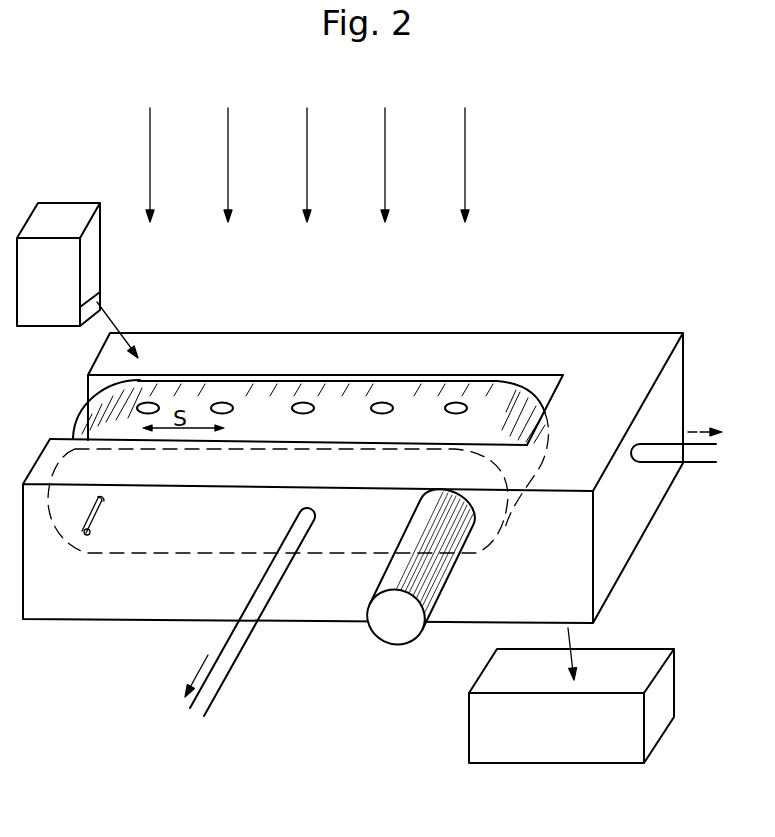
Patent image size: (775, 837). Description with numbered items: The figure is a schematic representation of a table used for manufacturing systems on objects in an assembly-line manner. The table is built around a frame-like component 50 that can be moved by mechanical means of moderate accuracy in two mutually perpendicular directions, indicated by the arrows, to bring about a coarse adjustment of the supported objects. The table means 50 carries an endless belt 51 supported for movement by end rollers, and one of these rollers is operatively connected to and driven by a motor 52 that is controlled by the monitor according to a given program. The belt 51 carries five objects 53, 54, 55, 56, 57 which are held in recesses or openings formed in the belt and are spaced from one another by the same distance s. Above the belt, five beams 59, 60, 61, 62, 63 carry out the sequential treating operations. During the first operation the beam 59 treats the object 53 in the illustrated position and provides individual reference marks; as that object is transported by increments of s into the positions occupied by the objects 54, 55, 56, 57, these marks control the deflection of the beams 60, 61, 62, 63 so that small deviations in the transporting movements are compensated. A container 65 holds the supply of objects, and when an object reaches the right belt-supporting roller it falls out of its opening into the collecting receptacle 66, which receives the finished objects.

The frame-like component 50 is at (66, 612).
The endless belt 51 is at (338, 396).
The motor 52 is at (383, 633).
The object 53 is at (148, 402).
The object 54 is at (222, 402).
The object 55 is at (303, 403).
The object 56 is at (382, 403).
The object 57 is at (456, 403).
The beam 59 is at (150, 151).
The beam 60 is at (228, 151).
The beam 61 is at (307, 151).
The beam 62 is at (385, 151).
The beam 63 is at (465, 151).
The container 65 is at (77, 280).
The collecting receptacle 66 is at (571, 695).